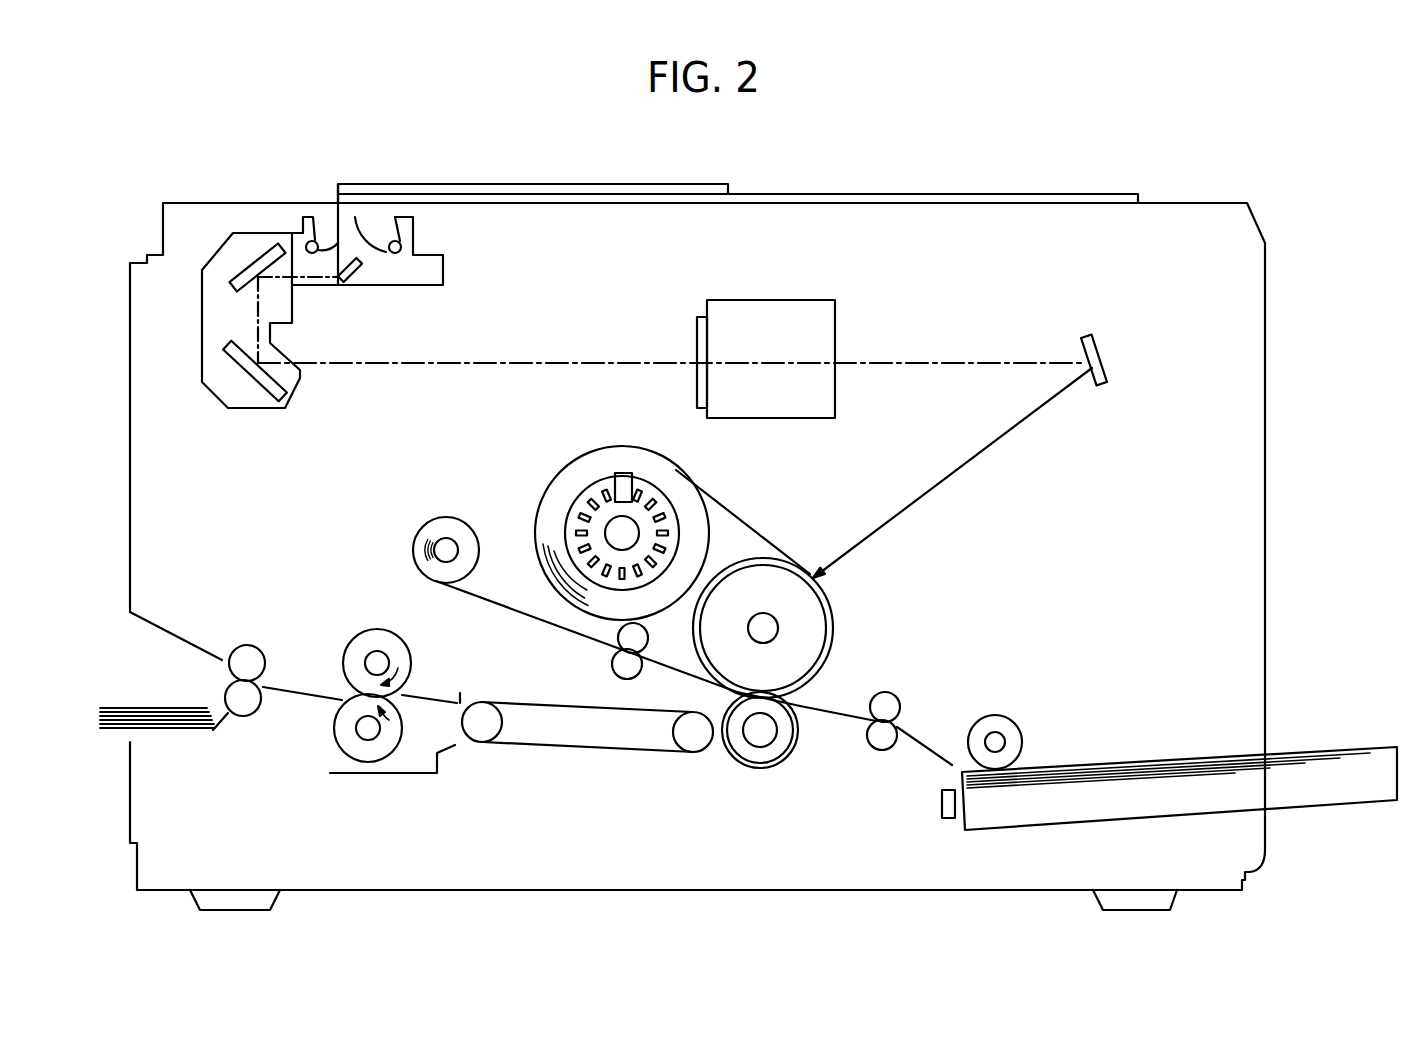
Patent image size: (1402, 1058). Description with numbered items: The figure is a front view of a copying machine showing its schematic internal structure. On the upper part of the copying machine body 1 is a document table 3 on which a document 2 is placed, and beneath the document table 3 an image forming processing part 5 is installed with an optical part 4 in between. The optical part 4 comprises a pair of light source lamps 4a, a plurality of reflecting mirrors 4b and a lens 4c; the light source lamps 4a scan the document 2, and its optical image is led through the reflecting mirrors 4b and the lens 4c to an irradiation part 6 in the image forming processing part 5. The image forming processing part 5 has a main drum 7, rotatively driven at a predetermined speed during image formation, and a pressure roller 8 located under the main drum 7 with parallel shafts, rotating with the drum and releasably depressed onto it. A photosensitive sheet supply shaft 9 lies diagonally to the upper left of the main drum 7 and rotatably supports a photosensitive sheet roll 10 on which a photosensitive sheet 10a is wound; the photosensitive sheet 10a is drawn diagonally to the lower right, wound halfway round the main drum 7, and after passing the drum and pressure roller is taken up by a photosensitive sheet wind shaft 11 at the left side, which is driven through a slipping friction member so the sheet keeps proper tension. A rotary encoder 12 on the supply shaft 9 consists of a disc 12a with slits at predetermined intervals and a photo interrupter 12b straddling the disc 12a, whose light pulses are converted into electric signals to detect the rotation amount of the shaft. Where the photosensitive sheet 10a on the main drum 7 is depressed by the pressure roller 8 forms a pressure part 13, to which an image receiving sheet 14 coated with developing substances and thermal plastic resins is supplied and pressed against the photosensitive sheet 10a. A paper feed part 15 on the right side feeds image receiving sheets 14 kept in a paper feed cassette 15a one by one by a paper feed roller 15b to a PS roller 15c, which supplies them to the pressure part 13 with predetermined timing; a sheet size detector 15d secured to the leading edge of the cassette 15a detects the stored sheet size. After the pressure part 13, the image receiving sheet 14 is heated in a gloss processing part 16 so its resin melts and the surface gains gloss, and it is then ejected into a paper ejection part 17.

The copying machine body 1 is at (1265, 360).
The document 2 is at (522, 184).
The document table 3 is at (803, 193).
The optical part 4 is at (659, 381).
The light source lamps 4a is at (403, 246).
The reflecting mirrors 4b is at (230, 345).
The lens 4c is at (775, 310).
The image forming processing part 5 is at (787, 596).
The irradiation part 6 is at (812, 575).
The main drum 7 is at (818, 622).
The pressure roller 8 is at (737, 752).
The photosensitive sheet supply shaft 9 is at (612, 535).
The photosensitive sheet roll 10 is at (610, 496).
The photosensitive sheet 10a is at (743, 522).
The photosensitive sheet wind shaft 11 is at (445, 548).
The rotary encoder 12 is at (610, 481).
The disc 12a is at (656, 502).
The photo interrupter 12b is at (624, 472).
The pressure part 13 is at (798, 692).
The image receiving sheet 14 is at (824, 712).
The paper feed part 15 is at (1122, 726).
The paper feed cassette 15a is at (1315, 805).
The paper feed roller 15b is at (1013, 730).
The PS roller 15c is at (893, 700).
The sheet size detector 15d is at (941, 805).
The gloss processing part 16 is at (354, 630).
The paper ejection part 17 is at (142, 646).